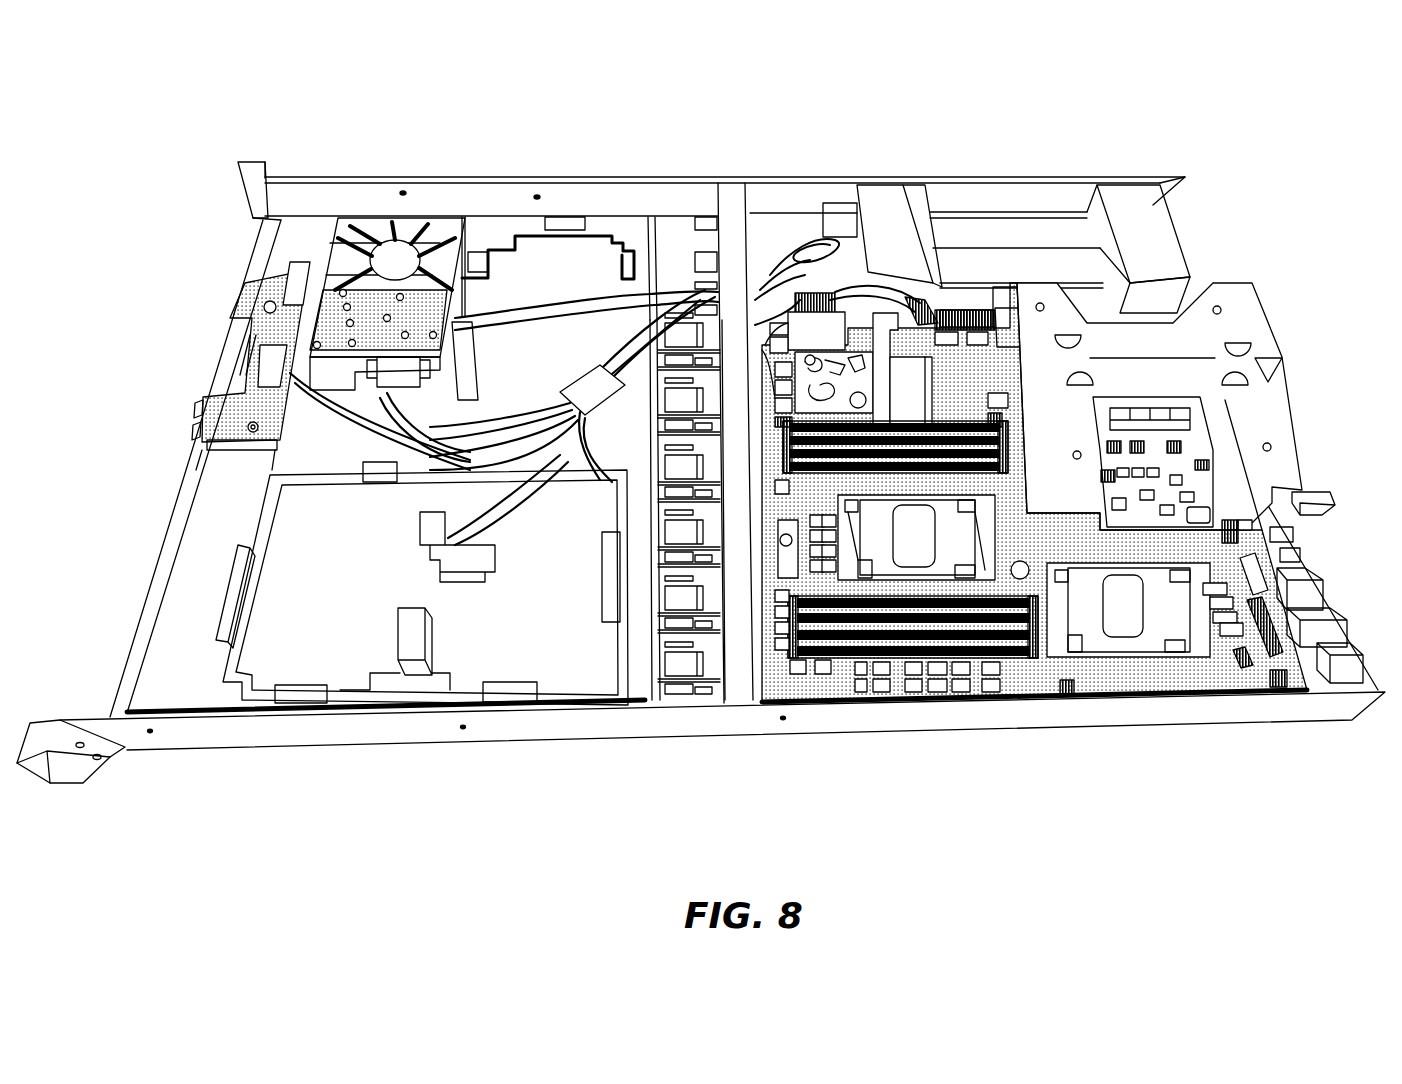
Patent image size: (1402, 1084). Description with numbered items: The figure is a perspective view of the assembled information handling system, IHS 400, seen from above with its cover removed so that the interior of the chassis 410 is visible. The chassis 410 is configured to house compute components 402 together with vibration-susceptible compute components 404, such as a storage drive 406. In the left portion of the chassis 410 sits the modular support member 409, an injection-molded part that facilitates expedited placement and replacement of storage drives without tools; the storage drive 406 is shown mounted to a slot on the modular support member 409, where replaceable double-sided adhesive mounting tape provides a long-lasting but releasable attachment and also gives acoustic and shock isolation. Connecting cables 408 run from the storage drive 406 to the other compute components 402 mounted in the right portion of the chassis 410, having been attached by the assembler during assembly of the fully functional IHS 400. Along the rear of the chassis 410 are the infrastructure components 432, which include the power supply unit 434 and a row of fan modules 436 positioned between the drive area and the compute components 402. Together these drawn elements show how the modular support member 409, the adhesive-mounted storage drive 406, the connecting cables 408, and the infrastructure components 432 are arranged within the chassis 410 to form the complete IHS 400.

The IHS 400 is at (548, 158).
The compute components 402 is at (1254, 418).
The vibration-susceptible compute components 404 is at (248, 353).
The storage drive 406 is at (400, 245).
The connecting cables 408 is at (648, 300).
The modular support member 409 is at (340, 640).
The chassis 410 is at (1088, 667).
The infrastructure components 432 is at (1200, 212).
The power supply unit 434 is at (1025, 247).
The fan modules 436 is at (675, 632).